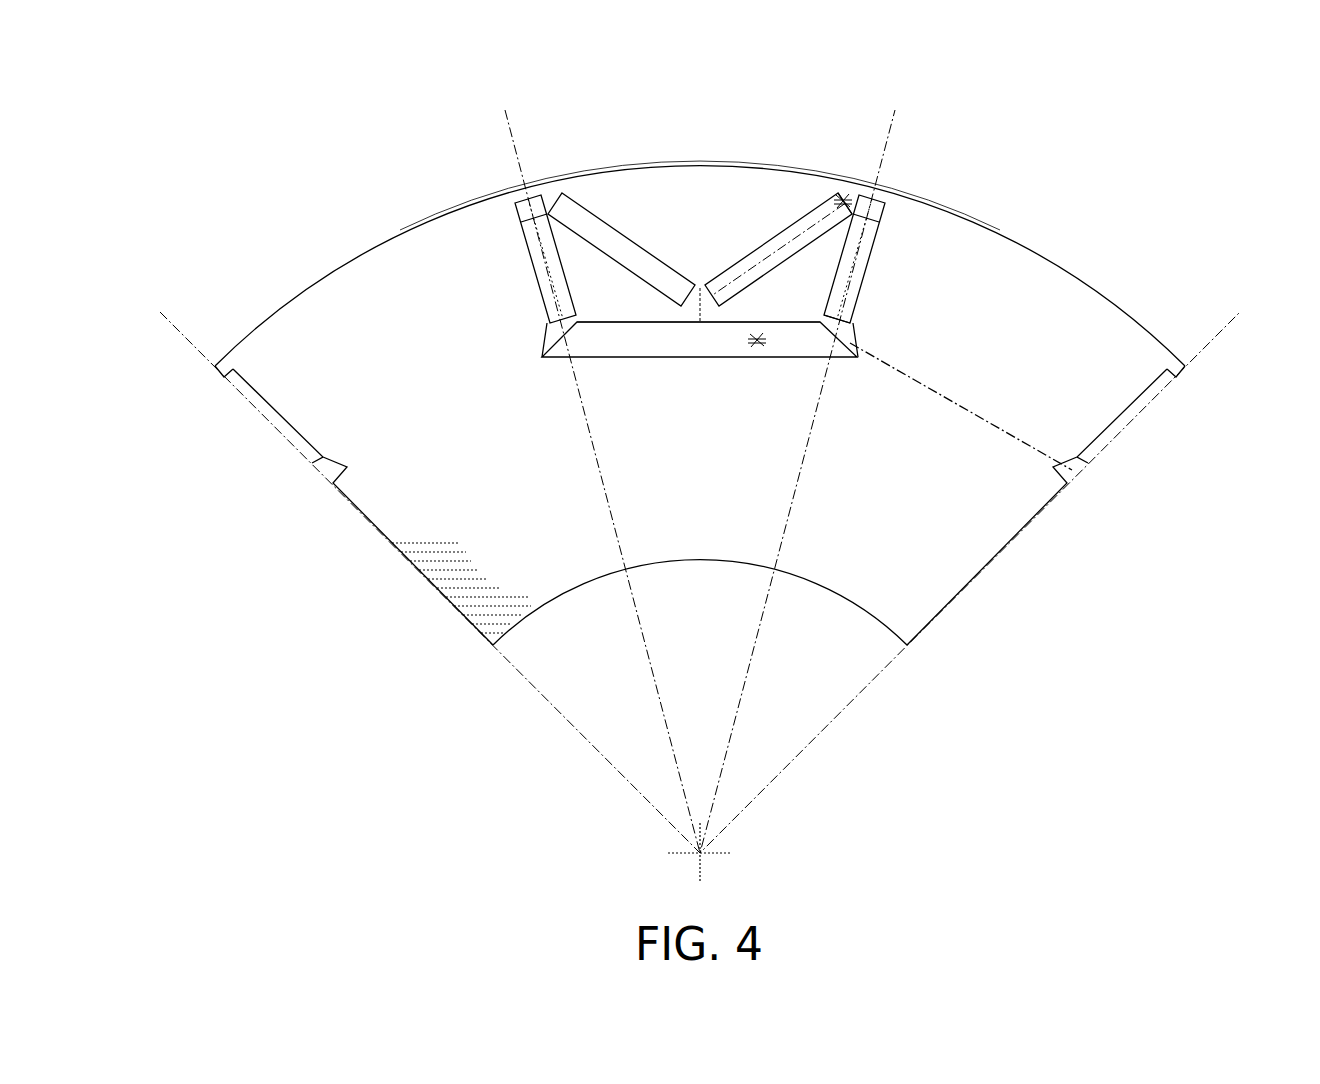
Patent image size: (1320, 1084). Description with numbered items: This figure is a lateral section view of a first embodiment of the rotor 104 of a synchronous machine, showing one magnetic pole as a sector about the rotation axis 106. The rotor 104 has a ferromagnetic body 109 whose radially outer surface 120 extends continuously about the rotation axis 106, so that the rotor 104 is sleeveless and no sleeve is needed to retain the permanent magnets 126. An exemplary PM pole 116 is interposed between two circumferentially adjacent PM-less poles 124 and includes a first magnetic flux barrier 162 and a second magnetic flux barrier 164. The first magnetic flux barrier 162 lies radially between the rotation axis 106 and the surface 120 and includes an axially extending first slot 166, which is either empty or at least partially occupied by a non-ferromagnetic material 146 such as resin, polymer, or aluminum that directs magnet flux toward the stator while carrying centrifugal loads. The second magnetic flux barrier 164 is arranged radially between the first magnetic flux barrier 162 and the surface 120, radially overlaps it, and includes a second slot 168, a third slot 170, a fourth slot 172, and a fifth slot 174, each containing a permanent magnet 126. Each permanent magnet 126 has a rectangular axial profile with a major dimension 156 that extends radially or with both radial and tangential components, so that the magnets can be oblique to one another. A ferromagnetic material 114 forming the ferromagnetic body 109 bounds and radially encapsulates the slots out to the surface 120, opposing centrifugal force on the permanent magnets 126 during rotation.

The rotor 104 is at (384, 771).
The rotation axis 106 is at (695, 853).
The ferromagnetic body 109 is at (888, 546).
The ferromagnetic material 114 is at (611, 189).
The PM pole 116 is at (713, 149).
The radially outer surface 120 is at (377, 247).
The PM-less poles 124 is at (286, 190).
The permanent magnet 126 is at (762, 231).
The non-ferromagnetic material 146 is at (758, 345).
The major dimension 156 is at (756, 269).
The first magnetic flux barrier 162 is at (930, 368).
The second magnetic flux barrier 164 is at (925, 273).
The first slot 166 is at (597, 343).
The second slot 168 is at (520, 210).
The third slot 170 is at (699, 290).
The fourth slot 172 is at (843, 198).
The fifth slot 174 is at (851, 325).